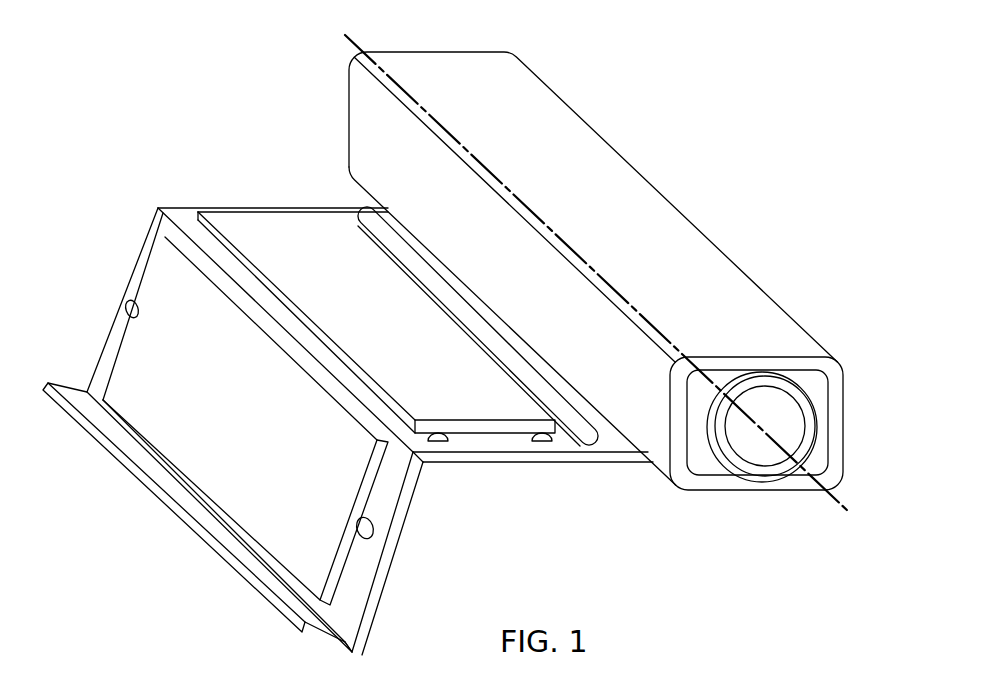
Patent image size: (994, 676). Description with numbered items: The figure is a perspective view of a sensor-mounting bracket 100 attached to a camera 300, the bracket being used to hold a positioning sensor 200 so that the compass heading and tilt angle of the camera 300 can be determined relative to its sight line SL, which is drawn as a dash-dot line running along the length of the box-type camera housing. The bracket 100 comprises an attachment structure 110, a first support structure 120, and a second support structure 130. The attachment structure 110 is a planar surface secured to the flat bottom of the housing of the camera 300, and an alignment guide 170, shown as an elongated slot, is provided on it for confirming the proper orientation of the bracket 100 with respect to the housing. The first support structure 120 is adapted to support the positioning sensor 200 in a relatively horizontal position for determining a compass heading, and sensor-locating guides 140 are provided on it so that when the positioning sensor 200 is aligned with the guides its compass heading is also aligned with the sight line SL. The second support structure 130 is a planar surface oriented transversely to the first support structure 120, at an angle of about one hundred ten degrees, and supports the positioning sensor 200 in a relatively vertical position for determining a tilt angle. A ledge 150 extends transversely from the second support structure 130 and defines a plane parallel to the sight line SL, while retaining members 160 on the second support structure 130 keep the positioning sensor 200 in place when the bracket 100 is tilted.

The sensor-mounting bracket 100 is at (118, 200).
The attachment structure 110 is at (403, 232).
The first support structure 120 is at (562, 443).
The second support structure 130 is at (350, 607).
The sensor-locating guides 140 is at (313, 210).
The ledge 150 is at (82, 396).
The retaining members 160 is at (130, 310).
The alignment guide 170 is at (468, 314).
The positioning sensor 200 is at (240, 229).
The camera 300 is at (633, 193).
The sight line SL is at (835, 497).